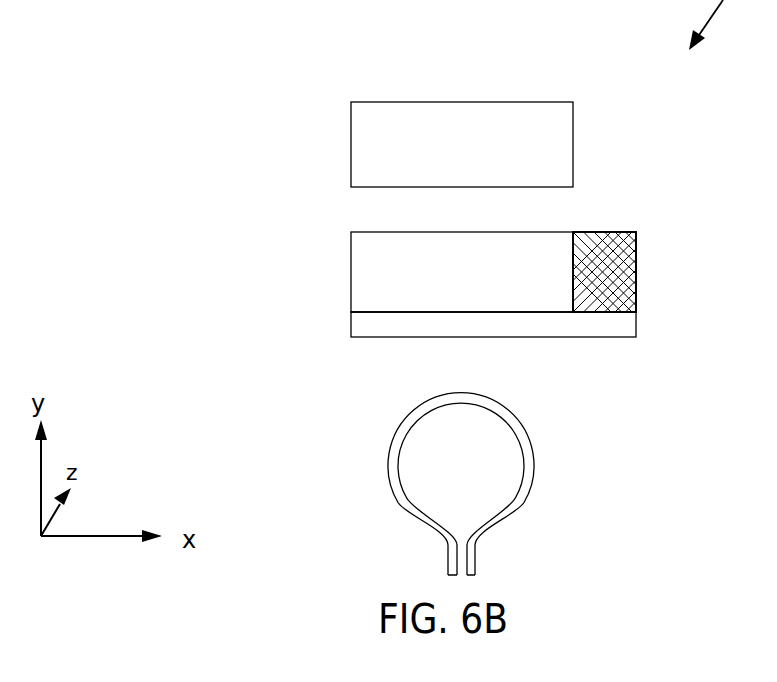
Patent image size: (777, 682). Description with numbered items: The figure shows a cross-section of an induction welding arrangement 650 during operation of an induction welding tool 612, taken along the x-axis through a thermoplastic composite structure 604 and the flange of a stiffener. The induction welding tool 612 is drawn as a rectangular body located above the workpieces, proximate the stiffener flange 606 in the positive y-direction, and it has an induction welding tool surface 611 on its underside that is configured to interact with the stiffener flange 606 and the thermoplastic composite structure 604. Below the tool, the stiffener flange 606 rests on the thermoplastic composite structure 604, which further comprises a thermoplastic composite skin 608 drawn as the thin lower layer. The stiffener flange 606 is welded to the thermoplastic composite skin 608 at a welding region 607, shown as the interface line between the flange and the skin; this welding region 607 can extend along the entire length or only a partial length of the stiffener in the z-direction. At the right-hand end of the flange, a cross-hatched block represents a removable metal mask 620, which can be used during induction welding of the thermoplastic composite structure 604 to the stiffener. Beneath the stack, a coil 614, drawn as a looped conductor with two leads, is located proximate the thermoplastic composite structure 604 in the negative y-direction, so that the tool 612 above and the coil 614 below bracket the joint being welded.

The haptic assembly 650 is at (230, 134).
The induction welding tool 612 is at (573, 122).
The induction welding tool surface 611 is at (366, 187).
The stiffener flange 606 is at (364, 262).
The removable metal mask 620 is at (630, 252).
The welding region 607 is at (352, 312).
The thermoplastic composite structure 604 is at (572, 338).
The thermoplastic composite skin 608 is at (351, 319).
The coil 614 is at (535, 417).